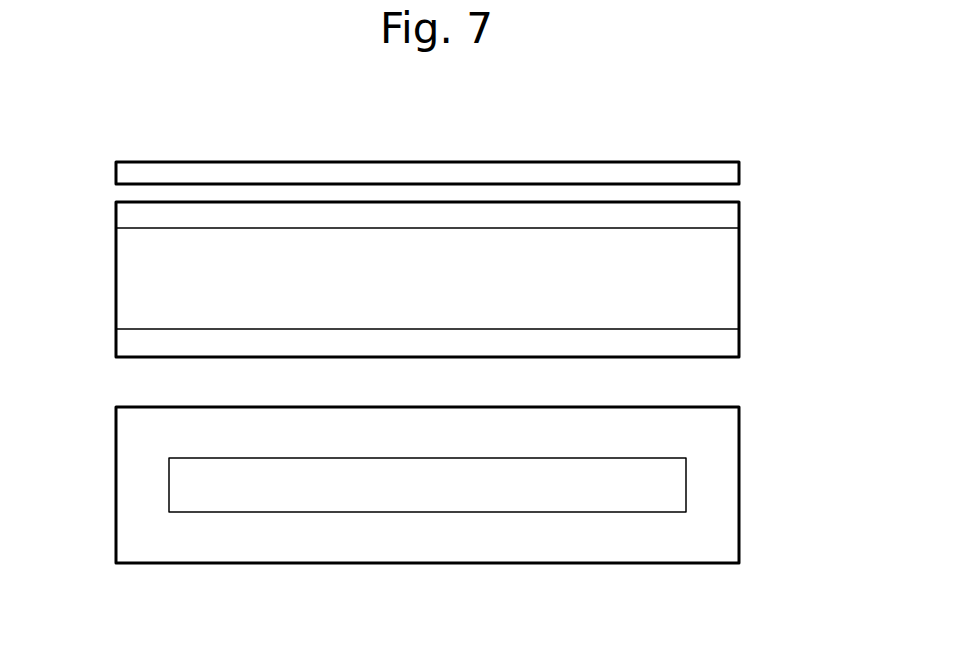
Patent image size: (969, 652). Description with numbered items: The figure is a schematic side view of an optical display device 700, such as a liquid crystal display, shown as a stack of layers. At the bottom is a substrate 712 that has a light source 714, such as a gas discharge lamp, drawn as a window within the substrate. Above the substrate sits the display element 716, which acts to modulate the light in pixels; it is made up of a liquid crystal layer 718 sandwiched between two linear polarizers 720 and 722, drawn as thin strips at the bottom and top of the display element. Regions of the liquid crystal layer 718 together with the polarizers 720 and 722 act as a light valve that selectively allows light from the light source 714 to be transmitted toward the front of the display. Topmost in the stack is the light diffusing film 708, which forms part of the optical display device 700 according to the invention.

The optical display device 700 is at (635, 148).
The light diffusing film 708 is at (128, 175).
The substrate 712 is at (727, 547).
The light source 714 is at (592, 497).
The display element 716 is at (752, 200).
The liquid crystal layer 718 is at (128, 283).
The linear polarizer 720 is at (128, 339).
The linear polarizer 722 is at (128, 218).